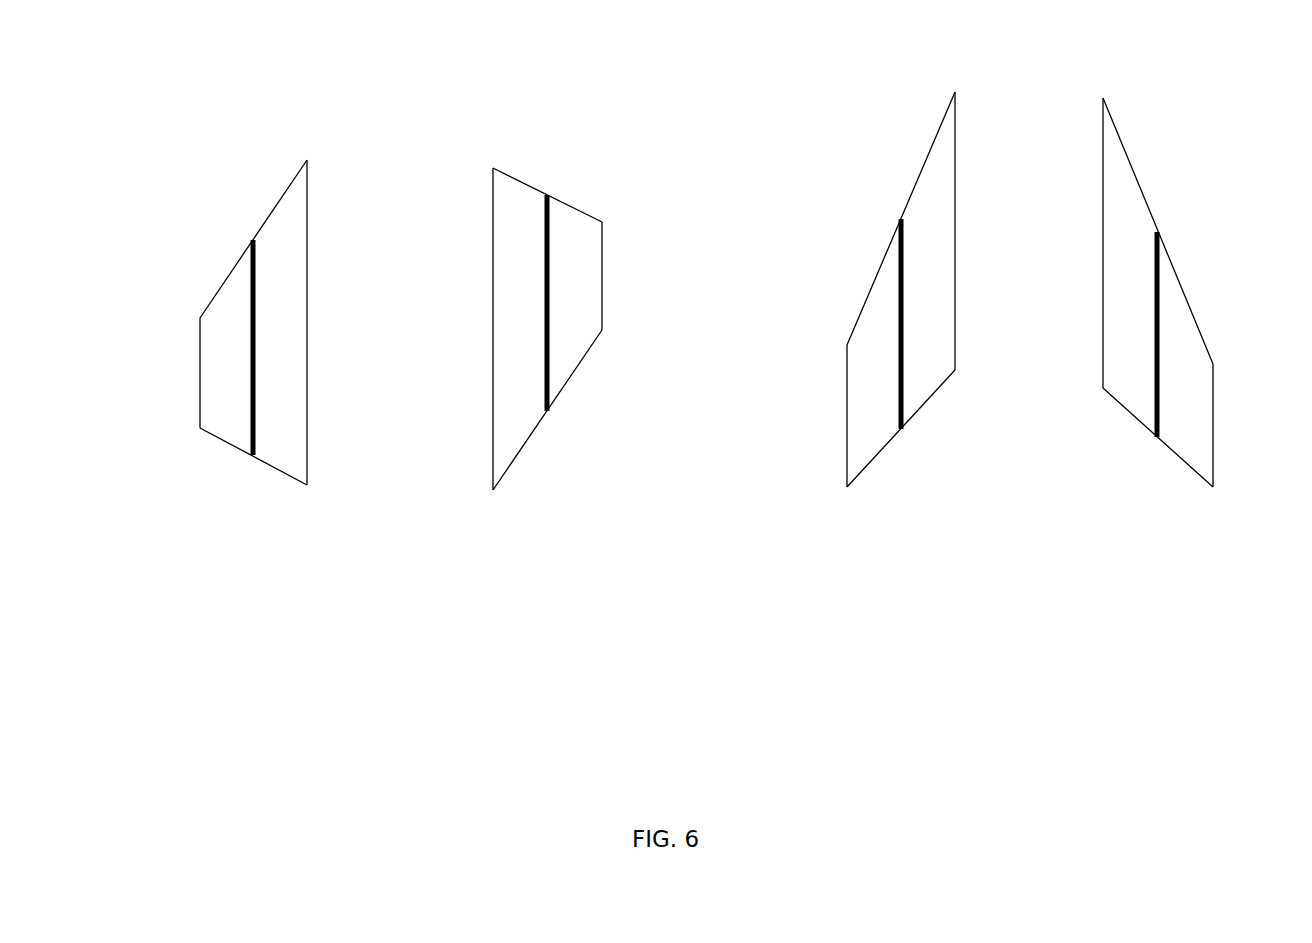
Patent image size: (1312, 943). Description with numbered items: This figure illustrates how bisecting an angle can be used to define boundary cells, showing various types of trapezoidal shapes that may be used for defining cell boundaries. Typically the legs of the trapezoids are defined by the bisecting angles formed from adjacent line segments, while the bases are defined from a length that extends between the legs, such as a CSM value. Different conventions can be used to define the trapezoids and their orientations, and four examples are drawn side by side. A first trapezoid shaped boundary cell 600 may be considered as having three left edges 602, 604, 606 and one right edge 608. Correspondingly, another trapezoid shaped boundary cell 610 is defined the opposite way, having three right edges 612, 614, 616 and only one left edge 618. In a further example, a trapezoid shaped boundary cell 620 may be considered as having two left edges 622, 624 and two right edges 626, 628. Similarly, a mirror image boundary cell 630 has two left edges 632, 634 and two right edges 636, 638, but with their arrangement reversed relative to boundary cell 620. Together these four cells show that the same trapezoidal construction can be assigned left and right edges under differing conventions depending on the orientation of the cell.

The trapezoid shaped boundary cell 600 is at (172, 142).
The left edge 602 is at (268, 222).
The left edge 604 is at (198, 370).
The left edge 606 is at (267, 463).
The right edge 608 is at (308, 316).
The trapezoid shaped boundary cell 610 is at (450, 143).
The right edge 612 is at (538, 188).
The right edge 614 is at (603, 285).
The right edge 616 is at (565, 383).
The left edge 618 is at (492, 327).
The trapezoid shaped boundary cell 620 is at (878, 143).
The left edge 622 is at (892, 245).
The left edge 624 is at (846, 397).
The right edge 626 is at (956, 268).
The right edge 628 is at (932, 397).
The mirror image boundary cell 630 is at (1170, 98).
The left edge 632 is at (1102, 272).
The left edge 634 is at (1135, 417).
The right edge 636 is at (1183, 294).
The right edge 638 is at (1214, 410).